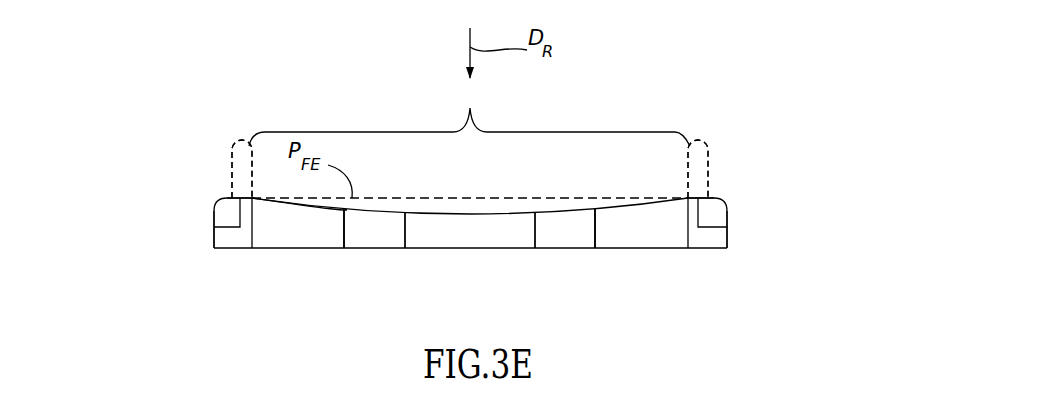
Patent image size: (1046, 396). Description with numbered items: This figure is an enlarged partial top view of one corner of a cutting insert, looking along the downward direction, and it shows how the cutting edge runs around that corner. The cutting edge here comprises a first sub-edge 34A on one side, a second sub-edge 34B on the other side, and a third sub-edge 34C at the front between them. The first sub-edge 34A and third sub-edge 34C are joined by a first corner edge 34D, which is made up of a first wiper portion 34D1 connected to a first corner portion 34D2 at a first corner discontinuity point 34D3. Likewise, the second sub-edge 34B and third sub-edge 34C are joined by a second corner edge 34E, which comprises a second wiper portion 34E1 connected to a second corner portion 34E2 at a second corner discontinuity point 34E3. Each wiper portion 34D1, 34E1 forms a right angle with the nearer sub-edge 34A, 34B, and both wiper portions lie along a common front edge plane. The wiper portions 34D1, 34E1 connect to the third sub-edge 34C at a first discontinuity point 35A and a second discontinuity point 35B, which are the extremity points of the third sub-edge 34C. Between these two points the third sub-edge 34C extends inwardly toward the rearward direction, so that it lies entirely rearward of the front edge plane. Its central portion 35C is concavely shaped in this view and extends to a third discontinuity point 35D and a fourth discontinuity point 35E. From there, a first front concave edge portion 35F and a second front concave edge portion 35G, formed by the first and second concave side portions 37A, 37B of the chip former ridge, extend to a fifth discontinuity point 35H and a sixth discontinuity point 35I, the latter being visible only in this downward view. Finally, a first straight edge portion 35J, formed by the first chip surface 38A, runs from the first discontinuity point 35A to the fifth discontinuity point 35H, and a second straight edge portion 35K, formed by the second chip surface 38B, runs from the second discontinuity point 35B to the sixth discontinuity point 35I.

The first sub-edge 34A is at (214, 240).
The second sub-edge 34B is at (727, 240).
The third sub-edge 34C is at (469, 115).
The first corner edge 34D is at (213, 197).
The first wiper portion 34D1 is at (243, 138).
The first corner portion 34D2 is at (213, 205).
The first corner discontinuity point 34D3 is at (232, 196).
The second corner edge 34E is at (727, 197).
The second wiper portion 34E1 is at (698, 138).
The second corner portion 34E2 is at (727, 203).
The second corner discontinuity point 34E3 is at (711, 196).
The first discontinuity point 35A is at (258, 203).
The second discontinuity point 35B is at (684, 207).
The central portion 35C is at (468, 215).
The third discontinuity point 35D is at (407, 213).
The fourth discontinuity point 35E is at (534, 213).
The first front concave edge portion 35F is at (376, 212).
The second front concave edge portion 35G is at (563, 215).
The fifth discontinuity point 35H is at (343, 210).
The sixth discontinuity point 35I is at (596, 209).
The first straight edge portion 35J is at (287, 203).
The second straight edge portion 35K is at (663, 208).
The first concave side portion 37A is at (402, 245).
The second concave side portion 37B is at (592, 245).
The first chip surface 38A is at (327, 244).
The second chip surface 38B is at (663, 244).